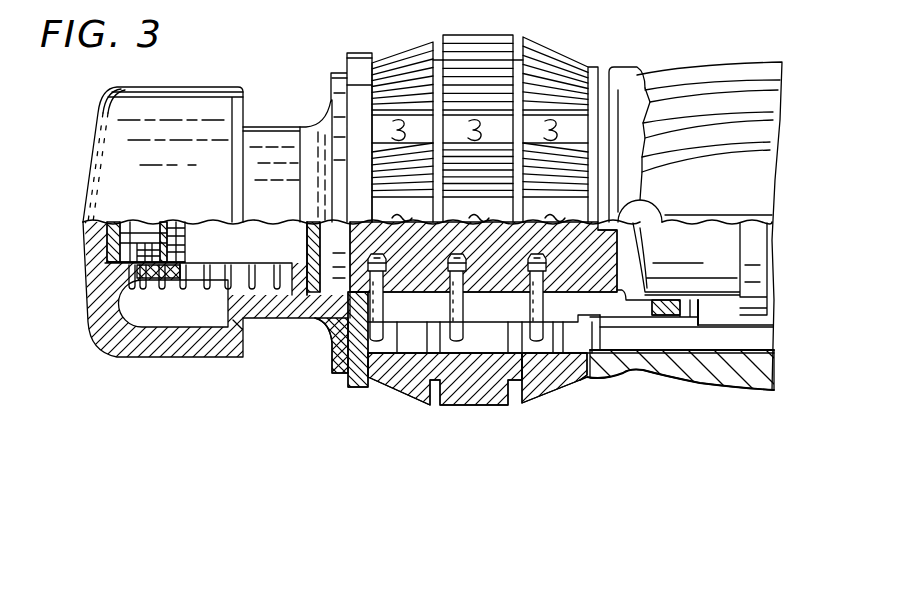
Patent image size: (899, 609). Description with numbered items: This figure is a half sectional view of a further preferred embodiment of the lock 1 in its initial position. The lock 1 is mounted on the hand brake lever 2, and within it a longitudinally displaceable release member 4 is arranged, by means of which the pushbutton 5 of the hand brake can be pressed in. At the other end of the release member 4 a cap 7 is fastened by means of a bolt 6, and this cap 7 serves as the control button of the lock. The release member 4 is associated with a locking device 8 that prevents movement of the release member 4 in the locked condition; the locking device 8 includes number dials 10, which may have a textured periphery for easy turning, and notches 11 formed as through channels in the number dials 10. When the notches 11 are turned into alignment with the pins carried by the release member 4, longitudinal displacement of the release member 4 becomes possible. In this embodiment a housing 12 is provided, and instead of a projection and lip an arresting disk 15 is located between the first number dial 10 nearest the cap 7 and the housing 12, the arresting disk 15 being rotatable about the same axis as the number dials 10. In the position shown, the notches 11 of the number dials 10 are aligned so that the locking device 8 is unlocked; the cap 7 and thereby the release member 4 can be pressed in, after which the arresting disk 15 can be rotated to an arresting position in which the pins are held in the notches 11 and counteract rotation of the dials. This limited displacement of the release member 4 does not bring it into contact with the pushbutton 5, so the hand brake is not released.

The lock 1 is at (317, 95).
The hand brake lever 2 is at (757, 308).
The release member 4 is at (573, 280).
The pushbutton 5 is at (663, 290).
The bolt 6 is at (148, 226).
The cap 7 is at (203, 102).
The locking device 8 is at (449, 33).
The number dials 10 is at (540, 73).
The notches 11 is at (410, 345).
The housing 12 is at (318, 333).
The arresting disk 15 is at (352, 388).